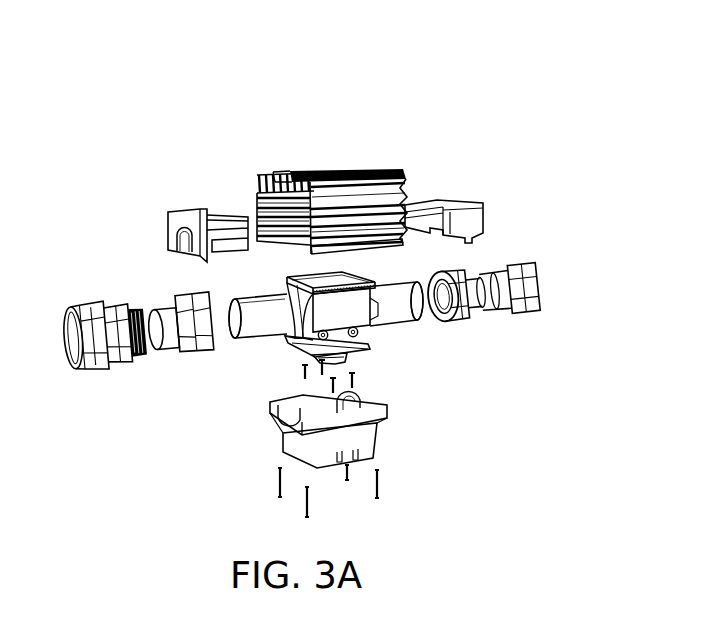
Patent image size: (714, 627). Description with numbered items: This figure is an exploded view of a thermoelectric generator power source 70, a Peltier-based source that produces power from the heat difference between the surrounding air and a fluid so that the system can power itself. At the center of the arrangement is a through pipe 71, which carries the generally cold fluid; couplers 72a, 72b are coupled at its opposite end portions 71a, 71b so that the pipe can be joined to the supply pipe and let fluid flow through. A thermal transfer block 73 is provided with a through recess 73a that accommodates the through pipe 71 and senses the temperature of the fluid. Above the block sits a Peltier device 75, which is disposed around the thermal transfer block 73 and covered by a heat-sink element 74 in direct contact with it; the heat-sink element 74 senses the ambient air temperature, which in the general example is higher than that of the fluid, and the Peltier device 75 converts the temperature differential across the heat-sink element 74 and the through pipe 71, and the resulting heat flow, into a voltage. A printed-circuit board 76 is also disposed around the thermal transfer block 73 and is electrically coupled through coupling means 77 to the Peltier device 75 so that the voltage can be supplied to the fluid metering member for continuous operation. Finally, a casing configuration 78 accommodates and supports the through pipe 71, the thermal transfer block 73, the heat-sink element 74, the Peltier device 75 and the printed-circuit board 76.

The thermoelectric generator power source 70 is at (508, 50).
The through pipe 71 is at (419, 305).
The end portion of the through pipe 71a is at (235, 306).
The end portion of the through pipe 71b is at (413, 281).
The coupler 72a is at (97, 363).
The coupler 72b is at (540, 305).
The thermal transfer block 73 is at (372, 305).
The through recess 73a is at (300, 336).
The heat-sink element 74 is at (298, 172).
The Peltier device 75 is at (287, 280).
The printed-circuit board 76 is at (370, 352).
The coupling means 77 is at (286, 341).
The casing configuration 78 is at (180, 208).